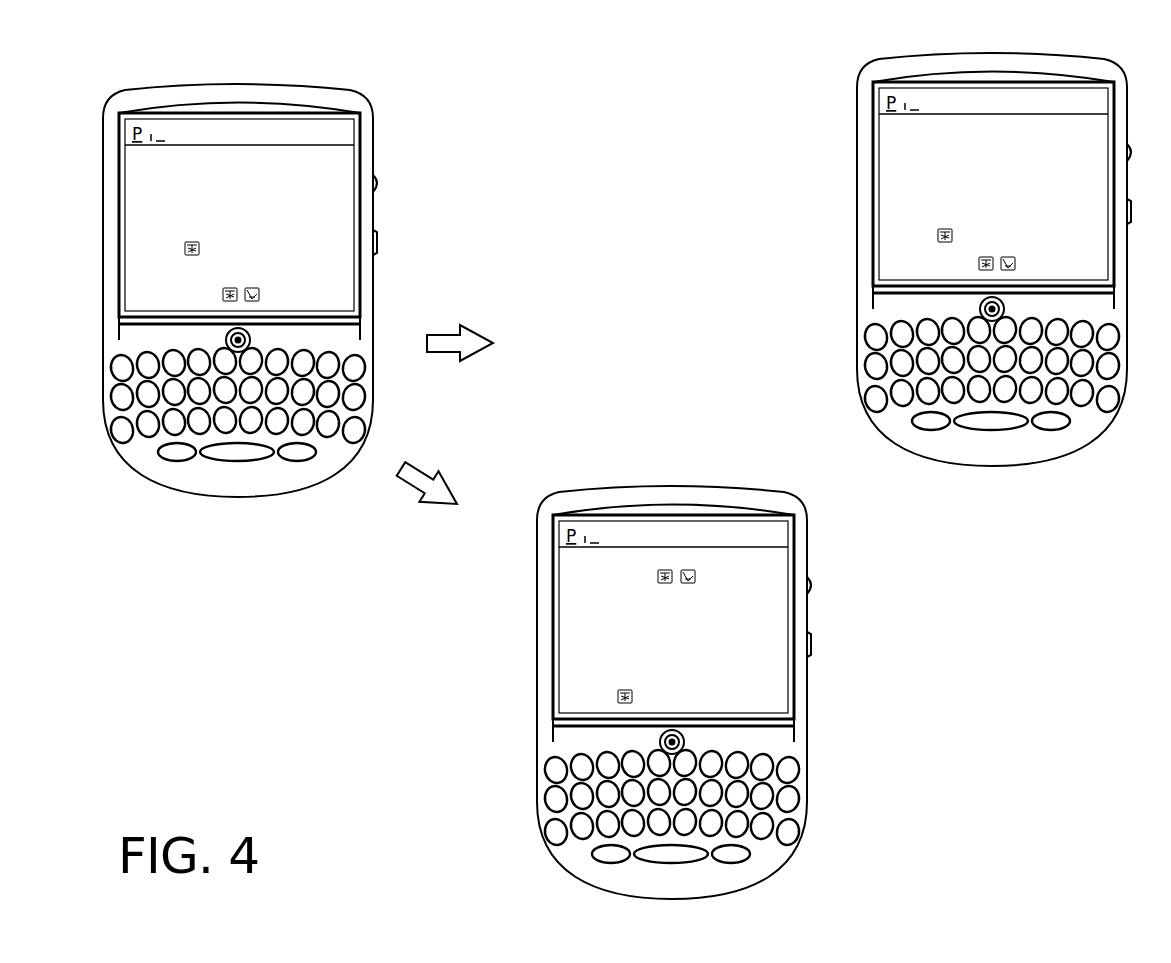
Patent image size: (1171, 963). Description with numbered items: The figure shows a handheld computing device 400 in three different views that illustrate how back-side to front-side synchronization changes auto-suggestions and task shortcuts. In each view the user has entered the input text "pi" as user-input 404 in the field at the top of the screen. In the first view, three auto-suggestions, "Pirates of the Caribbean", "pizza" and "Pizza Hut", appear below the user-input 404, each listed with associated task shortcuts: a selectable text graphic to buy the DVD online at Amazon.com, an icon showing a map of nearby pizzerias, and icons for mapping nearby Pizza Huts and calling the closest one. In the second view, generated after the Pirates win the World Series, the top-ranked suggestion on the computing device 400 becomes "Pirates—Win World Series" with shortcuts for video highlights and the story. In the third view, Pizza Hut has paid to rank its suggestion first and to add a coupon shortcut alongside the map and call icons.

The computing device 400 is at (330, 93).
The user-input 404 is at (192, 138).